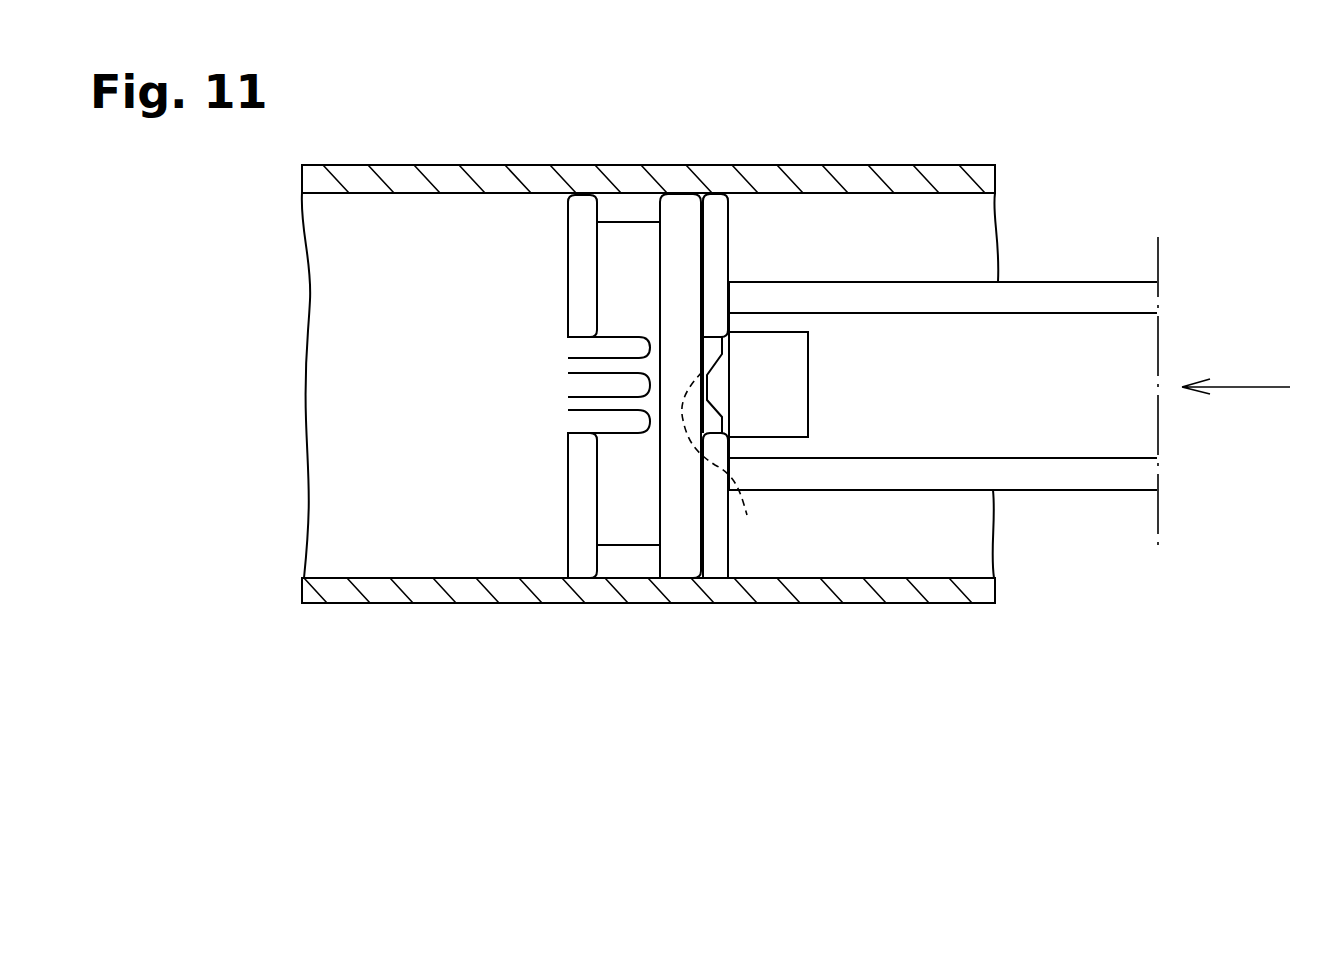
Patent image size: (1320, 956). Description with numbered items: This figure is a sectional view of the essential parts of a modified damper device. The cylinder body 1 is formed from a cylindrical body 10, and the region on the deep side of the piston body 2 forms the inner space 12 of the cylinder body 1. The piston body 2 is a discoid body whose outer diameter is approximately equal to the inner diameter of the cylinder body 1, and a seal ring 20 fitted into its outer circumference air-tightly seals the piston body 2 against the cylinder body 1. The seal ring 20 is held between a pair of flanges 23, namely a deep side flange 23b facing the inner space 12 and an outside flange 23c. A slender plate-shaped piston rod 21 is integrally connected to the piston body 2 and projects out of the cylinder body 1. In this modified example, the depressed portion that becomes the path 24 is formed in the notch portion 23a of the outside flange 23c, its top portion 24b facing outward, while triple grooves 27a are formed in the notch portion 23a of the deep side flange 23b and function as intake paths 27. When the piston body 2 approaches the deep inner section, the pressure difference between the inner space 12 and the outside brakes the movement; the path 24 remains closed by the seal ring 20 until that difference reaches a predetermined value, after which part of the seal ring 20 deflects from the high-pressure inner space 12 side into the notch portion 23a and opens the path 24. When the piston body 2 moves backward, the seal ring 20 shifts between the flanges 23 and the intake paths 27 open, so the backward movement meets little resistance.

The cylinder body 1 is at (650, 347).
The cylindrical body 10 is at (903, 165).
The inner space 12 is at (362, 397).
The piston body 2 is at (582, 560).
The seal ring 20 is at (680, 198).
The piston rod 21 is at (1070, 282).
The flanges 23 is at (659, 337).
The deep side flange 23b is at (583, 197).
The outside flange 23c is at (718, 198).
The notch portion 23a is at (715, 397).
The path 24 is at (795, 360).
The top portion 24b is at (741, 455).
The intake paths 27 is at (540, 385).
The triple grooves 27a is at (588, 417).